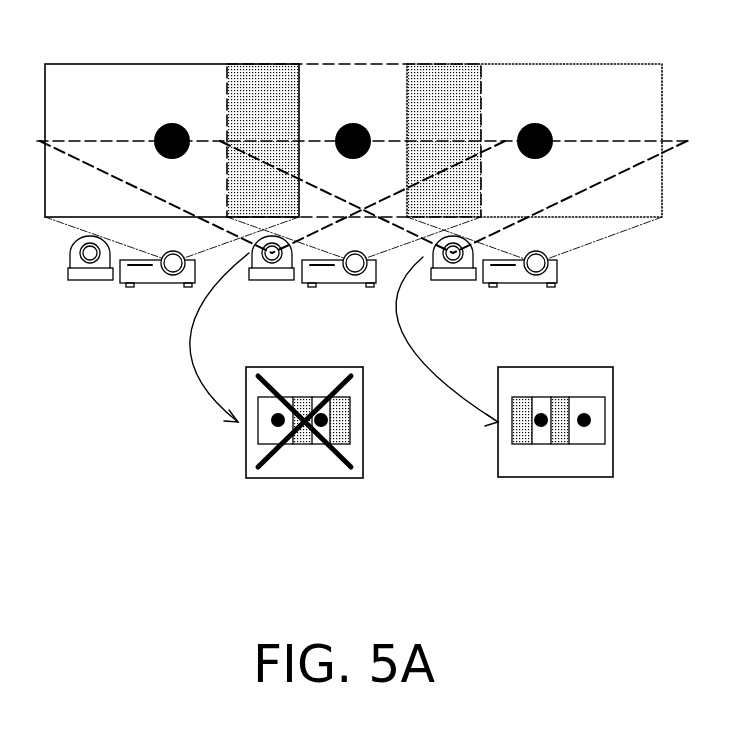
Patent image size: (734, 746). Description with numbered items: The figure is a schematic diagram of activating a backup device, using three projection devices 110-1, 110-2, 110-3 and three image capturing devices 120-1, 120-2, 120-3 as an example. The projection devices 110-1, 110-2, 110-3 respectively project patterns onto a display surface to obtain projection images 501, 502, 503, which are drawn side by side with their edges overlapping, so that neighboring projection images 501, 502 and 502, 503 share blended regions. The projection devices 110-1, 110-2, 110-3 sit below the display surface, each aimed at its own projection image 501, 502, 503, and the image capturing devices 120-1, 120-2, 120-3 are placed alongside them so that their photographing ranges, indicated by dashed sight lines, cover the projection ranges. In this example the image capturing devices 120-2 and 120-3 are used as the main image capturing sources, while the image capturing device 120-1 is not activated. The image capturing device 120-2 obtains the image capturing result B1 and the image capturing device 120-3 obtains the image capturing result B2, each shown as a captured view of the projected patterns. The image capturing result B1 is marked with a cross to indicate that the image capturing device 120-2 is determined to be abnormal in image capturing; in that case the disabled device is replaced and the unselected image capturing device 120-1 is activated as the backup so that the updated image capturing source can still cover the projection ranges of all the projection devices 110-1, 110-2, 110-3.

The projection image 501 is at (156, 64).
The projection image 502 is at (344, 64).
The projection image 503 is at (545, 64).
The projection device 110-1 is at (155, 287).
The projection device 110-2 is at (337, 287).
The projection device 110-3 is at (527, 287).
The image capturing device 120-1 is at (82, 282).
The image capturing device 120-2 is at (263, 282).
The image capturing device 120-3 is at (445, 282).
The image capturing result B1 is at (303, 479).
The image capturing result B2 is at (556, 479).